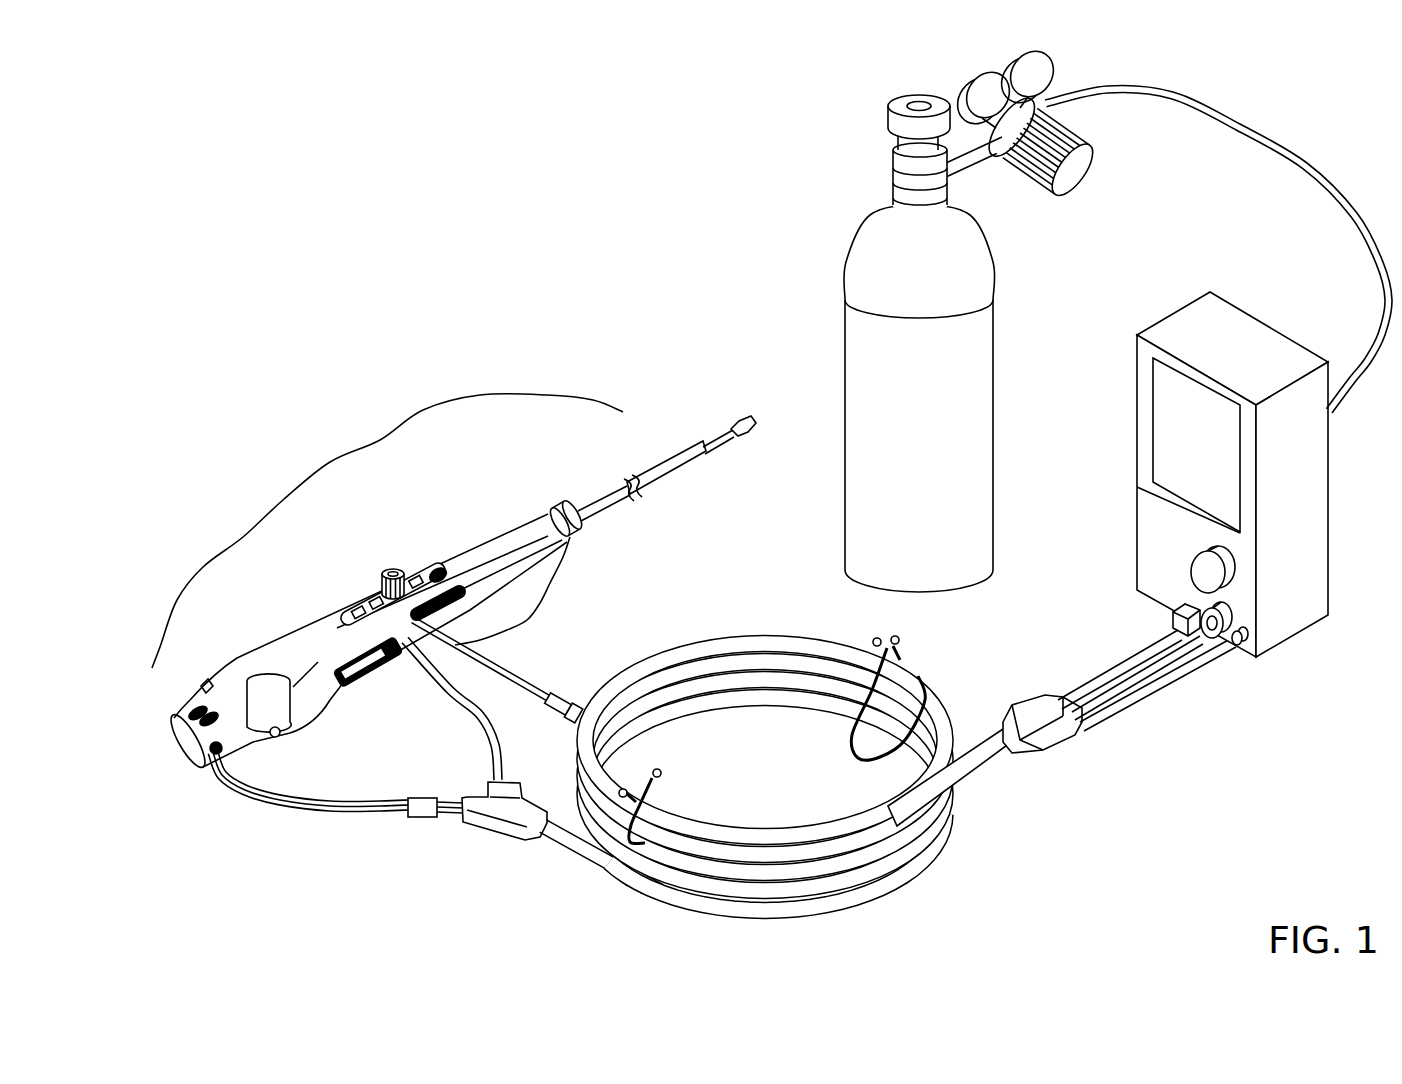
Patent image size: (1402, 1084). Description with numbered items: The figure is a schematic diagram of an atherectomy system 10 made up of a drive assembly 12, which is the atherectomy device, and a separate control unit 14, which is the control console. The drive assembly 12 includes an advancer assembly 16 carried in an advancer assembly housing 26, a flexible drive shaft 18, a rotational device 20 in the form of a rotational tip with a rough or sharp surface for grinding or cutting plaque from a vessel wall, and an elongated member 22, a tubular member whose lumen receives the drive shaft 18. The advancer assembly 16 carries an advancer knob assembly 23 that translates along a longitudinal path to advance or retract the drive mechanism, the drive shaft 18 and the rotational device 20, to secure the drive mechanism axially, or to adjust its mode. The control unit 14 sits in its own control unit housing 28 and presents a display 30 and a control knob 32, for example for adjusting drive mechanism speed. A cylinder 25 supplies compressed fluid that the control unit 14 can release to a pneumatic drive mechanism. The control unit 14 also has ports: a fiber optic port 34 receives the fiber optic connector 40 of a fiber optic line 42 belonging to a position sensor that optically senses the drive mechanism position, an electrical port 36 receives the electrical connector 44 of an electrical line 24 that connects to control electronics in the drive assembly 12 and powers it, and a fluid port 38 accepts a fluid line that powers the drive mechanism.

The atherectomy system 10 is at (533, 312).
The drive assembly 12 is at (316, 470).
The control unit 14 is at (1104, 320).
The advancer assembly 16 is at (318, 600).
The drive shaft 18 is at (723, 440).
The rotational device 20 is at (747, 418).
The elongated member 22 is at (668, 460).
The advancer knob assembly 23 is at (391, 572).
The electrical line 24 is at (262, 790).
The cylinder 25 is at (853, 238).
The advancer assembly housing 26 is at (247, 668).
The control unit housing 28 is at (1178, 323).
The display 30 is at (1163, 414).
The control knob 32 is at (1218, 573).
The fiber optic port 34 is at (1192, 612).
The electrical port 36 is at (1225, 618).
The fluid port 38 is at (1242, 633).
The fiber optic connector 40 is at (1172, 614).
The electrical connector 44 is at (1153, 645).
The fiber optic line 42 is at (452, 688).